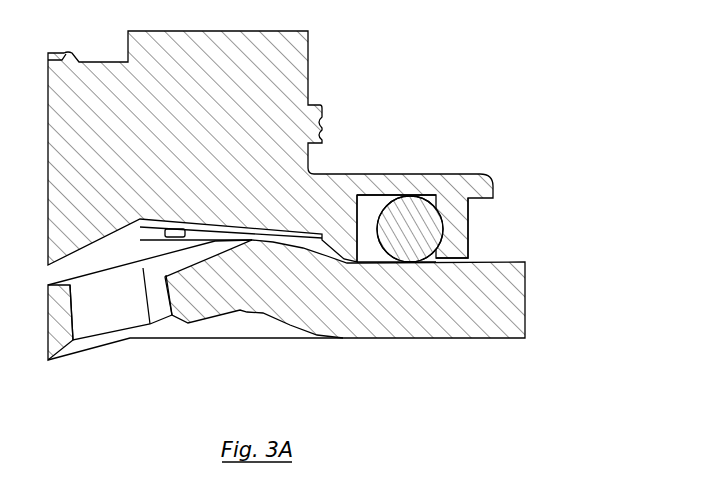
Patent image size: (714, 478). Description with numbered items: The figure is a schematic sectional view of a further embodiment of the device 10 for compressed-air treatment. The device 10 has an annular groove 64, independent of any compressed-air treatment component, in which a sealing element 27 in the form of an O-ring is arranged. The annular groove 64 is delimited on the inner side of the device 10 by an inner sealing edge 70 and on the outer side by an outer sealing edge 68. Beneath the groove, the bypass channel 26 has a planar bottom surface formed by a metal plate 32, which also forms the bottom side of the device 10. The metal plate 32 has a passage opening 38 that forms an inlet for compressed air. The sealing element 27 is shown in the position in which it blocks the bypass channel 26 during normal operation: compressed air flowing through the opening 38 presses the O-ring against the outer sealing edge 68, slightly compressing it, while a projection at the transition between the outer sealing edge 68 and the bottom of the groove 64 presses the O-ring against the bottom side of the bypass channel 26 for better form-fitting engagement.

The device for compressed-air treatment 10 is at (315, 222).
The bypass channel 26 is at (440, 260).
The sealing element 27 is at (433, 192).
The metal plate 32 is at (482, 318).
The passage opening 38 is at (108, 313).
The annular groove 64 is at (410, 230).
The outer sealing edge 68 is at (468, 228).
The inner sealing edge 70 is at (347, 228).